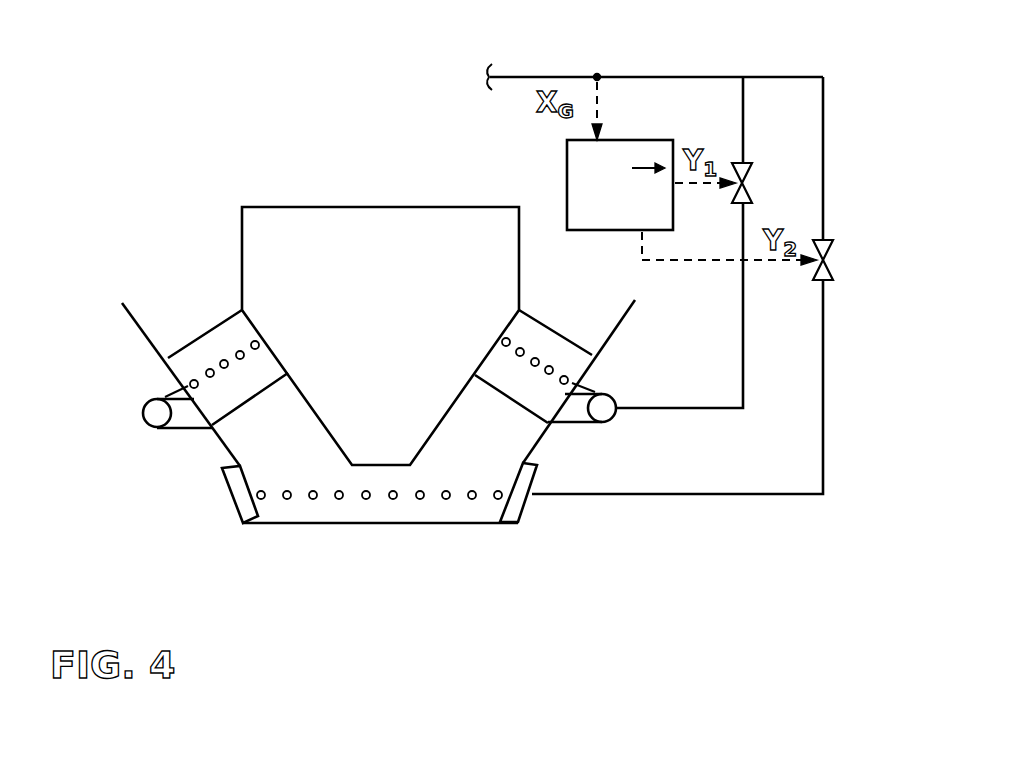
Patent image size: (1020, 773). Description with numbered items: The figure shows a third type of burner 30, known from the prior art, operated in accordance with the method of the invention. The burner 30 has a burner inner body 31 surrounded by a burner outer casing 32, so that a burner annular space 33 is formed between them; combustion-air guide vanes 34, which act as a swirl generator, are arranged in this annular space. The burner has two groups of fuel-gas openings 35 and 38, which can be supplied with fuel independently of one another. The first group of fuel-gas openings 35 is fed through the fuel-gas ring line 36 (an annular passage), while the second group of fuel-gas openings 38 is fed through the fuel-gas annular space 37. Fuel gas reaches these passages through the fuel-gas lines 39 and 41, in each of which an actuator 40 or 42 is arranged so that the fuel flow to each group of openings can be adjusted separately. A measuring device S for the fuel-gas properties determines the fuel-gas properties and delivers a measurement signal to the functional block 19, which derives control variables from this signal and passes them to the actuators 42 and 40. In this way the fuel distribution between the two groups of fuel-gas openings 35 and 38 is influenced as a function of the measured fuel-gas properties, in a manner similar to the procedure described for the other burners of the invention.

The measuring device for the fuel-gas properties S is at (599, 75).
The functional block 19 is at (645, 140).
The burner 30 is at (363, 570).
The burner inner body 31 is at (366, 340).
The burner outer casing 32 is at (612, 332).
The burner annular space 33 is at (456, 457).
The combustion-air guide vane, swirl generator 34 is at (200, 335).
The fuel-gas openings 35 is at (205, 368).
The fuel-gas ring line 36 is at (158, 428).
The fuel-gas annular space 37 is at (517, 500).
The fuel-gas openings 38 is at (365, 497).
The fuel-gas line 39 is at (752, 494).
The actuator 40 is at (829, 252).
The fuel-gas line 41 is at (666, 411).
The actuator 42 is at (745, 173).